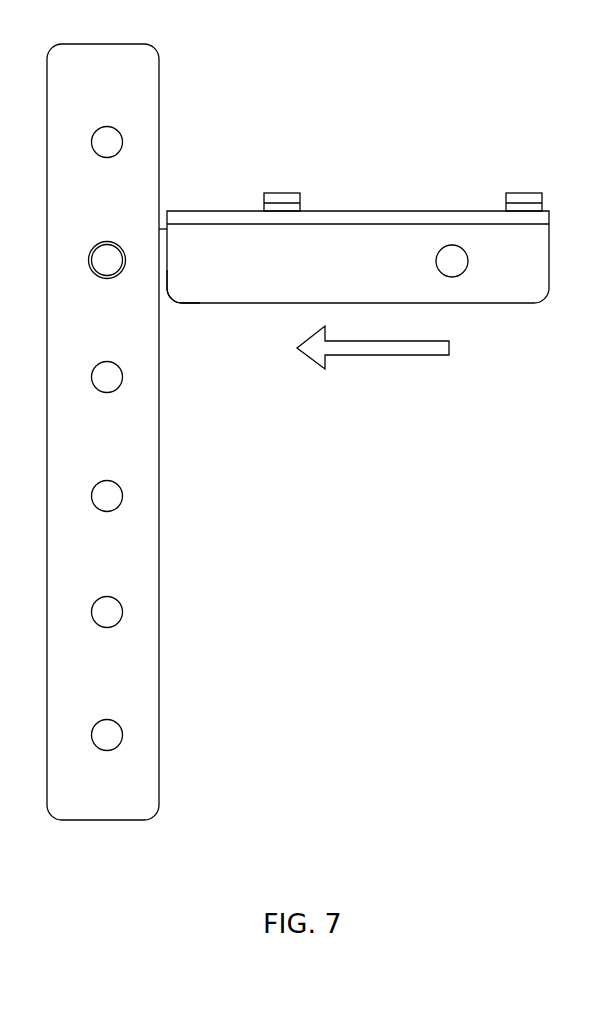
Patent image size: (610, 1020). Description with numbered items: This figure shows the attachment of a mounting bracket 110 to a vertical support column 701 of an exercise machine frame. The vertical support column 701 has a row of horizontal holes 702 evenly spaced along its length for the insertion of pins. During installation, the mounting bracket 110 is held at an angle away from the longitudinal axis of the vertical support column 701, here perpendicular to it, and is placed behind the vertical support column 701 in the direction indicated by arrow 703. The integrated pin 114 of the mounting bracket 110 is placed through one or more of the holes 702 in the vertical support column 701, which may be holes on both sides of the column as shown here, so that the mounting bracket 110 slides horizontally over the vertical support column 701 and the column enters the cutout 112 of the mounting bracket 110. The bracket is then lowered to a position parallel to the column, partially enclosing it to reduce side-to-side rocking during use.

The mounting bracket 110 is at (396, 153).
The cutout 112 is at (177, 320).
The integrated pin 114 is at (107, 263).
The vertical support column 701 is at (178, 694).
The horizontal holes 702 is at (105, 373).
The arrow 703 is at (382, 398).